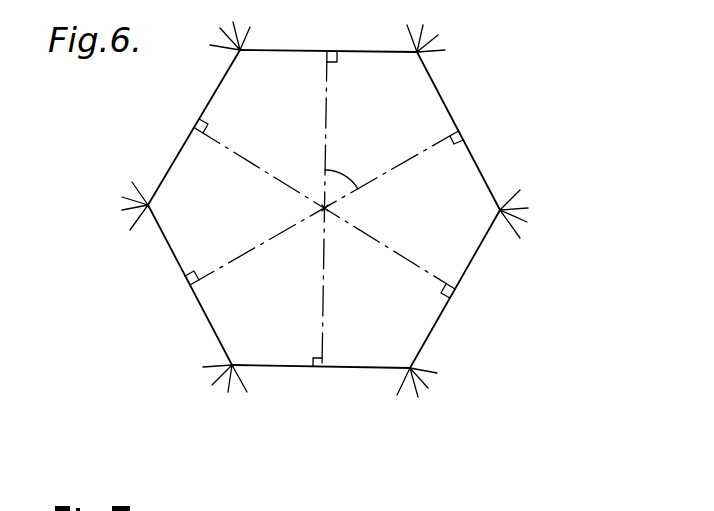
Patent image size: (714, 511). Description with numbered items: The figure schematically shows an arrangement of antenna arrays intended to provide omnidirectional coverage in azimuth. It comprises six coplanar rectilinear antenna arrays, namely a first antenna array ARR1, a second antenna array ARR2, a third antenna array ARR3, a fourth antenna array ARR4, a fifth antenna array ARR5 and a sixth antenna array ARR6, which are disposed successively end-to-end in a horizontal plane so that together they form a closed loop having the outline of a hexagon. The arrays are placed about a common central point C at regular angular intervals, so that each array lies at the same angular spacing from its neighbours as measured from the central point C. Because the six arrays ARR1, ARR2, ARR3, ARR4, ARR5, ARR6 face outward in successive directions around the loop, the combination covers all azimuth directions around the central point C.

The first rectilinear antenna array ARR1 is at (297, 52).
The second rectilinear antenna array ARR2 is at (476, 163).
The third rectilinear antenna array ARR3 is at (462, 282).
The fourth rectilinear antenna array ARR4 is at (337, 367).
The fifth rectilinear antenna array ARR5 is at (174, 257).
The sixth rectilinear antenna array ARR6 is at (184, 142).
The common central point C is at (318, 223).